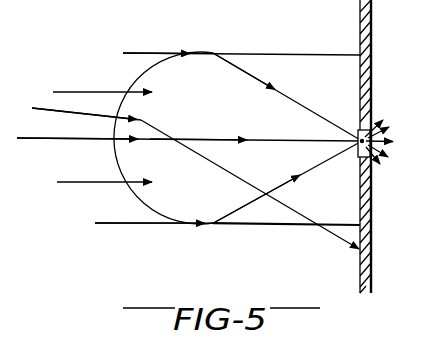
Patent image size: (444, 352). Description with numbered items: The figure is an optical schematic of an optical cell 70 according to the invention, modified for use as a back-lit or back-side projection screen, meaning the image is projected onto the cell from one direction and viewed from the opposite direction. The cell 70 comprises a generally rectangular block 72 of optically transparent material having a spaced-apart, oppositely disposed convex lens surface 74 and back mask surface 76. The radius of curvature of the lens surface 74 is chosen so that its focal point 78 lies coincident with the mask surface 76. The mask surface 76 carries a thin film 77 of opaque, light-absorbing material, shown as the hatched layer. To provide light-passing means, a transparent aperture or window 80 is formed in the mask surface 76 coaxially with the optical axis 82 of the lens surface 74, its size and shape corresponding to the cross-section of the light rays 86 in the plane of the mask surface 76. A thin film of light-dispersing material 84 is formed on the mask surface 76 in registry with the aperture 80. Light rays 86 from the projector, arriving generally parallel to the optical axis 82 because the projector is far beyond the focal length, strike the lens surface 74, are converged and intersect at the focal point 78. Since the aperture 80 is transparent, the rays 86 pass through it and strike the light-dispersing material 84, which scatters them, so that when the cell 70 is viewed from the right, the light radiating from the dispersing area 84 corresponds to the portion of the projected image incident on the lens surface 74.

The optical cell 70 is at (275, 43).
The rectangular block 72 is at (262, 212).
The lens surface 74 is at (160, 82).
The mask surface 76 is at (372, 38).
The thin film of opaque light-absorbing material 77 is at (363, 59).
The focal point 78 is at (357, 131).
The transparent aperture 80 is at (357, 157).
The optical axis 82 is at (226, 137).
The light-dispersing material 84 is at (378, 128).
The light rays 86 is at (164, 53).